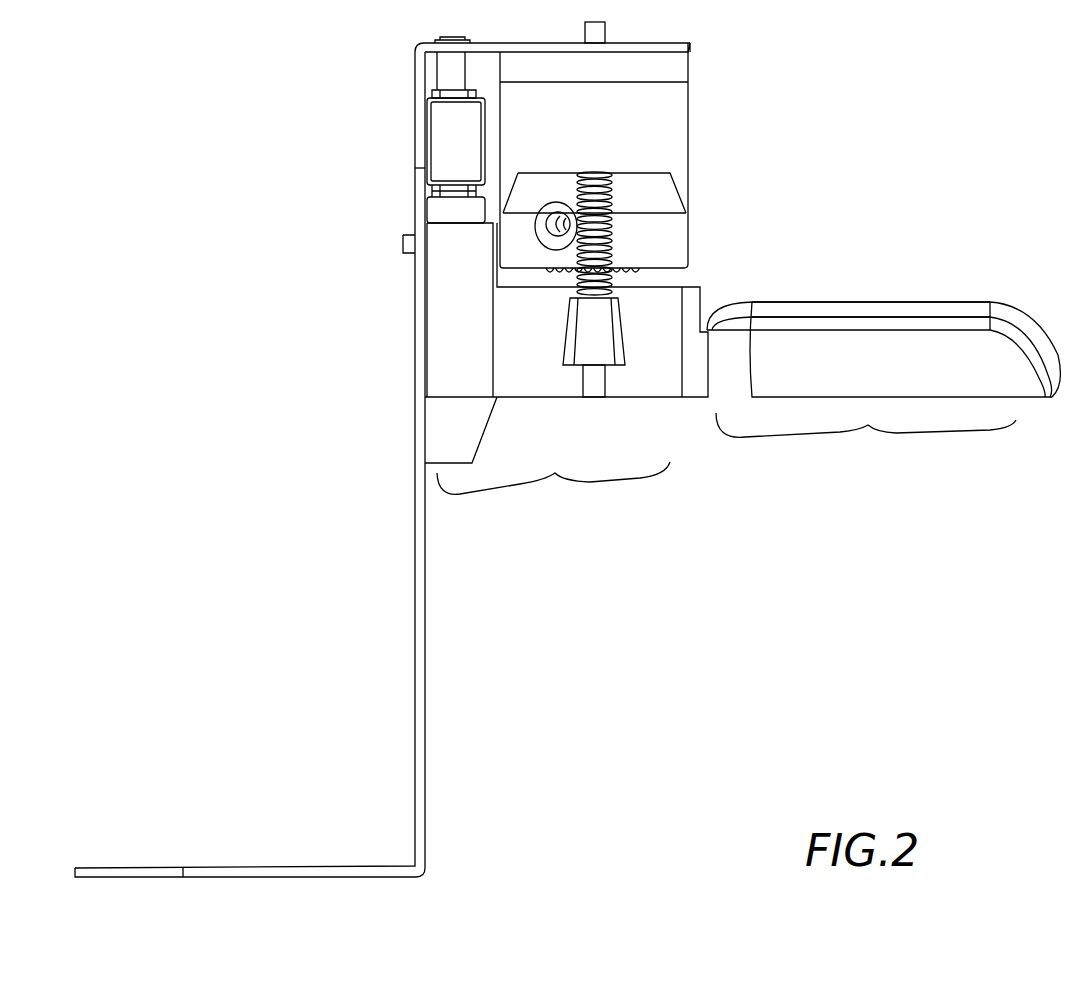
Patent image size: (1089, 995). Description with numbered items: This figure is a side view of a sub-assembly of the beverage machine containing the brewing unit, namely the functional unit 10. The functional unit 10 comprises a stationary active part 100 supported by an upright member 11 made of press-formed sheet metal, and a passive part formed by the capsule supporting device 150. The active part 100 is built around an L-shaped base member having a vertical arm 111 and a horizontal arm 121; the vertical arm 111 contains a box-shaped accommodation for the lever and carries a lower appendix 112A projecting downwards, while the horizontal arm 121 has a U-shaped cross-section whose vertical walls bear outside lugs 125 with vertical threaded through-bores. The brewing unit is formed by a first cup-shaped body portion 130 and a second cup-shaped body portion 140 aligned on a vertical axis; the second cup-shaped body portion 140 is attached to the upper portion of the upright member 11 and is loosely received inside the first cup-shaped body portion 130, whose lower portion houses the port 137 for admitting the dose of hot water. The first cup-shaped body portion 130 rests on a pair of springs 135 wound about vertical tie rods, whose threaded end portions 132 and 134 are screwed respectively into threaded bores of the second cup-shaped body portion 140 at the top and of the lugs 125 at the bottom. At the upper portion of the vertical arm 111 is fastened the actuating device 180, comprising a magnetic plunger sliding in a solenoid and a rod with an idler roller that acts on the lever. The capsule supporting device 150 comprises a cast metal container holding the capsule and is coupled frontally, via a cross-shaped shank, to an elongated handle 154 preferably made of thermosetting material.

The functional unit 10 is at (748, 176).
The upright member 11 is at (413, 491).
The active part 100 is at (553, 486).
The vertical arm 111 is at (455, 258).
The lower appendix 112A is at (460, 427).
The horizontal arm 121 is at (535, 383).
The lugs 125 is at (603, 323).
The first cup-shaped body portion 130 is at (692, 110).
The threaded end portion 132 is at (605, 30).
The threaded end portion 134 is at (596, 383).
The springs 135 is at (612, 233).
The port 137 is at (548, 236).
The second cup-shaped body portion 140 is at (694, 65).
The capsule supporting device 150 is at (883, 391).
The elongated handle 154 is at (884, 315).
The actuating device 180 is at (440, 143).